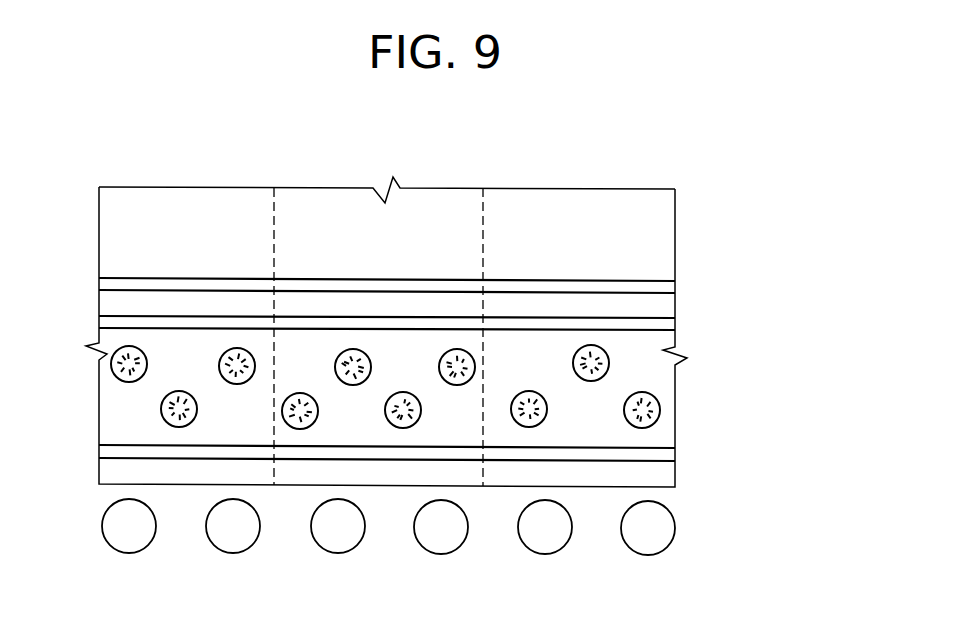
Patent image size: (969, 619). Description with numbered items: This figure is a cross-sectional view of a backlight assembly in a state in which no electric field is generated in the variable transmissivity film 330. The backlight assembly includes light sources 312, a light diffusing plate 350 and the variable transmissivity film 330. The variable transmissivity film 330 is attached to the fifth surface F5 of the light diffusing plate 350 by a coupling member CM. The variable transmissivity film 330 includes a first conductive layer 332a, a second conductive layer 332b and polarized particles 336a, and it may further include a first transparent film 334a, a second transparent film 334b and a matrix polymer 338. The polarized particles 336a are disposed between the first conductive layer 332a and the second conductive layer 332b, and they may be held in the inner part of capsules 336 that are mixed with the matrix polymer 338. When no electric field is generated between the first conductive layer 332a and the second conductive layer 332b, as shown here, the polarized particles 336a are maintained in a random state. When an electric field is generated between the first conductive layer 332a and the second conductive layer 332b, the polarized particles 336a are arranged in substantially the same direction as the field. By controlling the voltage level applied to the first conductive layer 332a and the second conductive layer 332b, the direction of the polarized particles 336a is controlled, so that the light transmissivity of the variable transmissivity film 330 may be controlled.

The light diffusing plate 350 is at (665, 221).
The fifth surface F5 is at (666, 283).
The coupling member CM is at (665, 291).
The second transparent film 334b is at (665, 306).
The second conductive layer 332b is at (665, 327).
The matrix polymer 338 is at (665, 376).
The capsules 336 is at (657, 397).
The polarized particles 336a is at (656, 421).
The first conductive layer 332a is at (665, 452).
The first transparent film 334a is at (665, 477).
The variable transmissivity film 330 is at (772, 317).
The light sources 312 is at (660, 532).